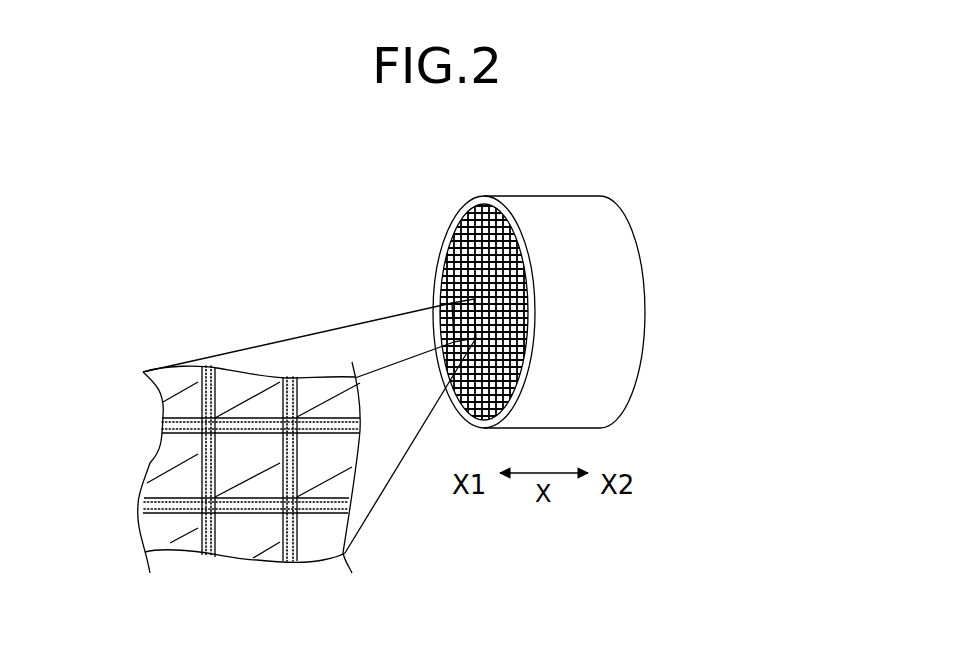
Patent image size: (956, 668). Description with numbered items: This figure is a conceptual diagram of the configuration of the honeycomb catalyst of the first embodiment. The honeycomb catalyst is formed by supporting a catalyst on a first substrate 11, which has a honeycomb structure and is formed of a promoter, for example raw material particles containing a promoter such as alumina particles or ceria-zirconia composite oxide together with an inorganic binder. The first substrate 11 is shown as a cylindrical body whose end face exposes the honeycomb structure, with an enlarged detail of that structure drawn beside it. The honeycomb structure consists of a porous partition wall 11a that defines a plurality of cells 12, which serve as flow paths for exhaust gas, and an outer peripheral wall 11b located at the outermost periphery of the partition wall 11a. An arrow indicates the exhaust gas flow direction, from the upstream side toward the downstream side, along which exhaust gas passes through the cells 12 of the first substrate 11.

The first substrate 11 is at (654, 210).
The porous partition wall 11a is at (436, 282).
The outer peripheral wall 11b is at (529, 207).
The cells 12 is at (150, 460).